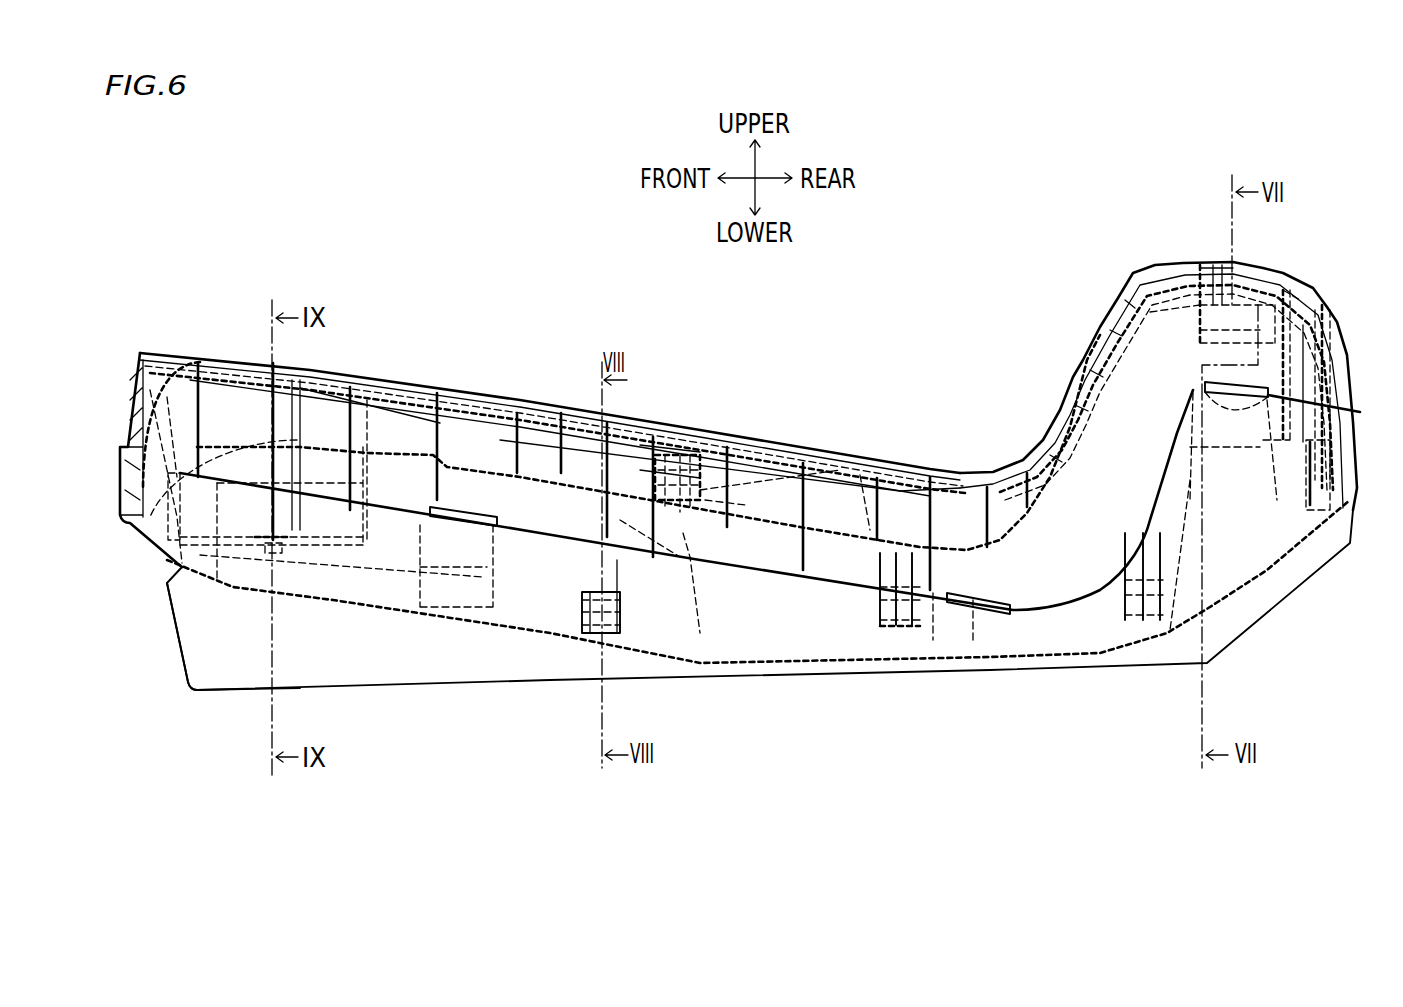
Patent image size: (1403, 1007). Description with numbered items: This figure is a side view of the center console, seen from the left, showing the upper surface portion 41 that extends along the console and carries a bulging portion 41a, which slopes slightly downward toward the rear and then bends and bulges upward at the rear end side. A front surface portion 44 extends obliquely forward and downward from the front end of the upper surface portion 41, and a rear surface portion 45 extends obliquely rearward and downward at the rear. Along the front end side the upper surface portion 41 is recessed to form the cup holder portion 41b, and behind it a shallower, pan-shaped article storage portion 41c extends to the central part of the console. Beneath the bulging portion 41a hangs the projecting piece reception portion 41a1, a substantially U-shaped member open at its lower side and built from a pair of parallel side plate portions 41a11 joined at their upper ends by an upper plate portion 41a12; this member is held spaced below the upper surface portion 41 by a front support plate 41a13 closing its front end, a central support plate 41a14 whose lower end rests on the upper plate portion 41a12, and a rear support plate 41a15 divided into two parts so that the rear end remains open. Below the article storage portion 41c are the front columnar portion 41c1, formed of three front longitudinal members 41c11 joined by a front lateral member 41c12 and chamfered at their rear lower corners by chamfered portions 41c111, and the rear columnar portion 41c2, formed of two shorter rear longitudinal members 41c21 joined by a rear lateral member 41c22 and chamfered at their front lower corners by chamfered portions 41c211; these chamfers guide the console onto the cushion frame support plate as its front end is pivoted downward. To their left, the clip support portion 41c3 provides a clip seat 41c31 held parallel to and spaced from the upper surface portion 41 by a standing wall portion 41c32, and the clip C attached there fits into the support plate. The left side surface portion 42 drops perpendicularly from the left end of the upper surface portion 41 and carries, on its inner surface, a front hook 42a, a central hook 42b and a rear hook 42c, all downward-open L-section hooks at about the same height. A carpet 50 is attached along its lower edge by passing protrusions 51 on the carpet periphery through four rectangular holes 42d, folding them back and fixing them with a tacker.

The upper surface portion 41 is at (437, 393).
The bulging portion 41a is at (1233, 287).
The projecting piece reception portion 41a1 is at (1177, 283).
The side plate portions 41a11 is at (1217, 330).
The upper plate portion 41a12 is at (1217, 263).
The front support plate 41a13 is at (1200, 320).
The central support plate 41a14 is at (1233, 293).
The rear support plate 41a15 is at (1293, 288).
The cup holder portion 41b is at (357, 430).
The article storage portion 41c is at (535, 435).
The front columnar portion 41c1 is at (623, 533).
The front longitudinal members 41c11 is at (622, 440).
The chamfered portion 41c111 is at (700, 633).
The front lateral member 41c12 is at (602, 517).
The rear columnar portion 41c2 is at (735, 442).
The rear longitudinal members 41c21 is at (794, 460).
The chamfered portion 41c211 is at (713, 500).
The rear lateral member 41c22 is at (752, 500).
The clip support portion 41c3 is at (652, 430).
The clip seat 41c31 is at (680, 557).
The standing wall portion 41c32 is at (672, 436).
The left side surface portion 42 is at (810, 633).
The front hook 42a is at (582, 592).
The central hook 42b is at (200, 560).
The rear hook 42c is at (1123, 597).
The rectangular holes 42d is at (490, 507).
The front surface portion 44 is at (127, 413).
The rear surface portion 45 is at (1347, 390).
The carpet 50 is at (220, 657).
The protrusions 51 is at (350, 580).
The clip C is at (678, 505).